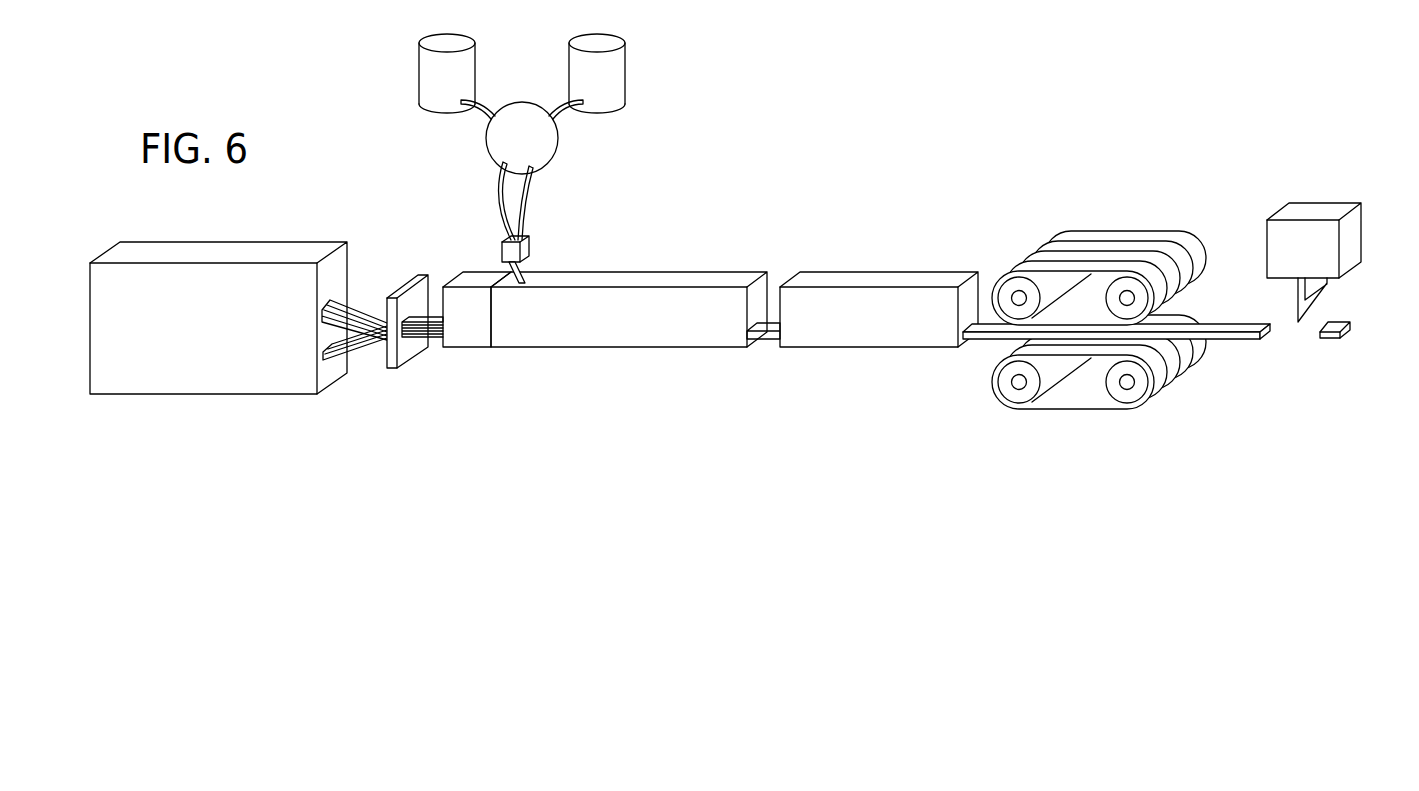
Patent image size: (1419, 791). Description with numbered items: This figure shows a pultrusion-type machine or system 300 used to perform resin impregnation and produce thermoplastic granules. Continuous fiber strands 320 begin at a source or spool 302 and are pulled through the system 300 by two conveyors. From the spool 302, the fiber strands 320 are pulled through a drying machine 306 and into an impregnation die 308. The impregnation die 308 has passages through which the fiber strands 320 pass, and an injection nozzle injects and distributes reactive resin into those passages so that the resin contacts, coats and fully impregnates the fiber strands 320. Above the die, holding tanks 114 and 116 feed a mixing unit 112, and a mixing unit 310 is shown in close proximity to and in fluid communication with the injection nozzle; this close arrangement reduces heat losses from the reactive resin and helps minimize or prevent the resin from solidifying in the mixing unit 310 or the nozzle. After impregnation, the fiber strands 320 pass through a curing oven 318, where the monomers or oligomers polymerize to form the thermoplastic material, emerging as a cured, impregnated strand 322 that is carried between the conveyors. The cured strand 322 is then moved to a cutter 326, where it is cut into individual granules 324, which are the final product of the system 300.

The pultrusion-type machine or system 300 is at (865, 160).
The source or spool 302 is at (217, 326).
The drying machine 306 is at (485, 326).
The impregnation die 308 is at (647, 326).
The mixing unit 310 is at (530, 268).
The mixing unit 112 is at (540, 172).
The holding tank 114 is at (433, 78).
The holding tank 116 is at (618, 87).
The curing oven 318 is at (880, 326).
The fiber strands 320 is at (363, 312).
The composite tape 322 is at (1230, 328).
The granules 324 is at (1352, 326).
The cutter 326 is at (1317, 215).